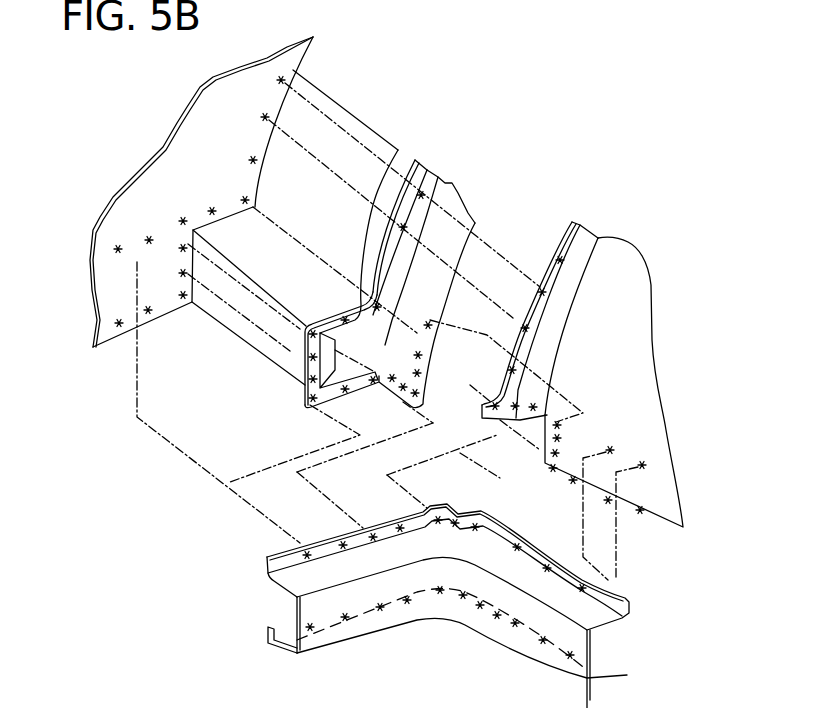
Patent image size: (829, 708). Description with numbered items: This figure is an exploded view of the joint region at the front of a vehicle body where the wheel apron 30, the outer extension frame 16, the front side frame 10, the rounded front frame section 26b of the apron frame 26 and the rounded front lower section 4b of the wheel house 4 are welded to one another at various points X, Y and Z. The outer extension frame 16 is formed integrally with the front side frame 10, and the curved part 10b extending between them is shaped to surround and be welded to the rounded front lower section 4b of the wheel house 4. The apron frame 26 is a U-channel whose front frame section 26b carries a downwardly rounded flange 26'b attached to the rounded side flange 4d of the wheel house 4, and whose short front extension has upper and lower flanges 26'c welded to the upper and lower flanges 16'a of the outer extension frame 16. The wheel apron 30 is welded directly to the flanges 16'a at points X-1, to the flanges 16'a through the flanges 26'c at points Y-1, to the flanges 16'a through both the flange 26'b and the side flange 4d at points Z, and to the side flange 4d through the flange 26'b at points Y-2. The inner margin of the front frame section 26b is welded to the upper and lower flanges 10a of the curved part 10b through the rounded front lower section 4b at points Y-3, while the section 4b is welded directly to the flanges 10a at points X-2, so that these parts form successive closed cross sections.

The front side frame 10 is at (537, 6).
The upper and lower flanges of the front side frame 10a is at (627, 594).
The curved part of the front side frame 10b is at (502, 647).
The outer extension frame 16 is at (447, 632).
The upper and lower flanges of the outer extension frame 16'a is at (424, 567).
The apron frame 26 is at (304, 227).
The front frame section of the apron frame 26b is at (370, 250).
The flange of the front frame section 26'b is at (423, 236).
The upper and lower flanges of the short front extension 26'c is at (353, 279).
The wheel apron 30 is at (118, 347).
The wheel house 4 is at (653, 278).
The rounded front lower section of the wheel house 4b is at (667, 515).
The rounded side flange of the wheel house 4d is at (547, 262).
The welding points X is at (181, 273).
The welding points X-1 is at (120, 246).
The welding points X-2 is at (641, 462).
The welding points Y-1 is at (184, 218).
The welding points Y-2 is at (253, 157).
The welding points Y-3 is at (430, 319).
The welding points Z is at (245, 197).